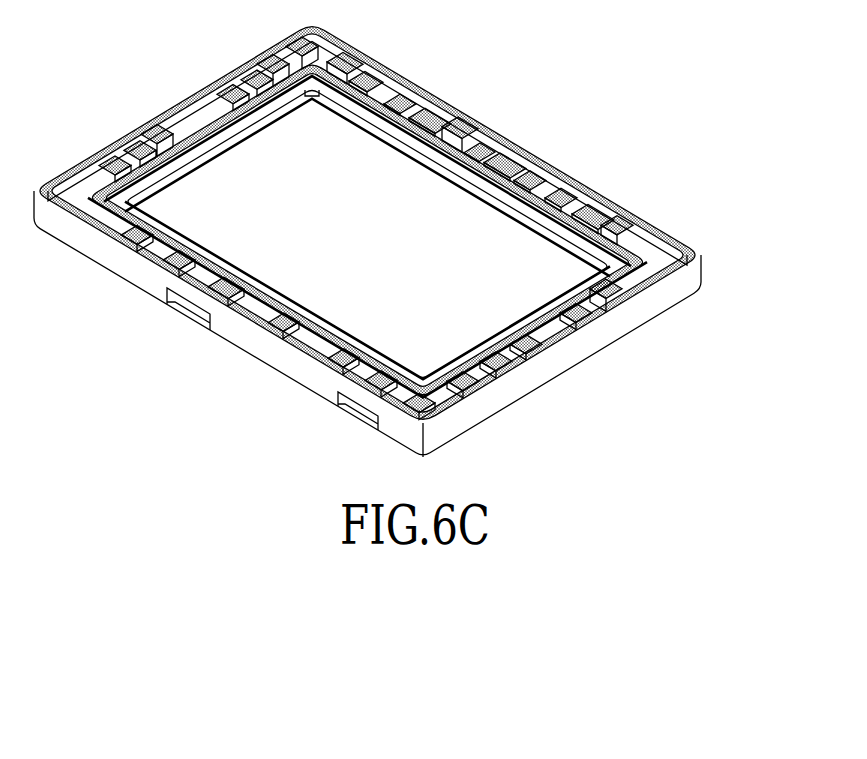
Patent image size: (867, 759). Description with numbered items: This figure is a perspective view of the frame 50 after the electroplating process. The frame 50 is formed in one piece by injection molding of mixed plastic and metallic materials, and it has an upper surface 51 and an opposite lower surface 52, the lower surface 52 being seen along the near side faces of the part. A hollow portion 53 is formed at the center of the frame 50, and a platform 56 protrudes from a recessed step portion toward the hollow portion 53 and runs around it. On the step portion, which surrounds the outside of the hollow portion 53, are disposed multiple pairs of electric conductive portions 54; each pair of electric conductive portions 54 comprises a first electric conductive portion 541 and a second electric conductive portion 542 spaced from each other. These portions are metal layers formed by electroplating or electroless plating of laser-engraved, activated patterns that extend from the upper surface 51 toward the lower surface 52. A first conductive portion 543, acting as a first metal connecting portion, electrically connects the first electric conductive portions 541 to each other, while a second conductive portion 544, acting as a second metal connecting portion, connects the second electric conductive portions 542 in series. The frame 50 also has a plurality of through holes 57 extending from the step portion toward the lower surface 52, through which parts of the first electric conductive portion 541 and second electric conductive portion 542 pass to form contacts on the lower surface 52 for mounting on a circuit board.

The frame 50 is at (262, 348).
The upper surface 51 is at (207, 85).
The lower surface 52 is at (106, 266).
The hollow portion 53 is at (153, 198).
The pair of electric conductive portions 54 is at (610, 174).
The first electric conductive portion 541 is at (630, 203).
The second electric conductive portion 542 is at (550, 197).
The first conductive portion 543 is at (683, 250).
The second conductive portion 544 is at (522, 345).
The platform 56 is at (217, 145).
The through hole 57 is at (545, 185).